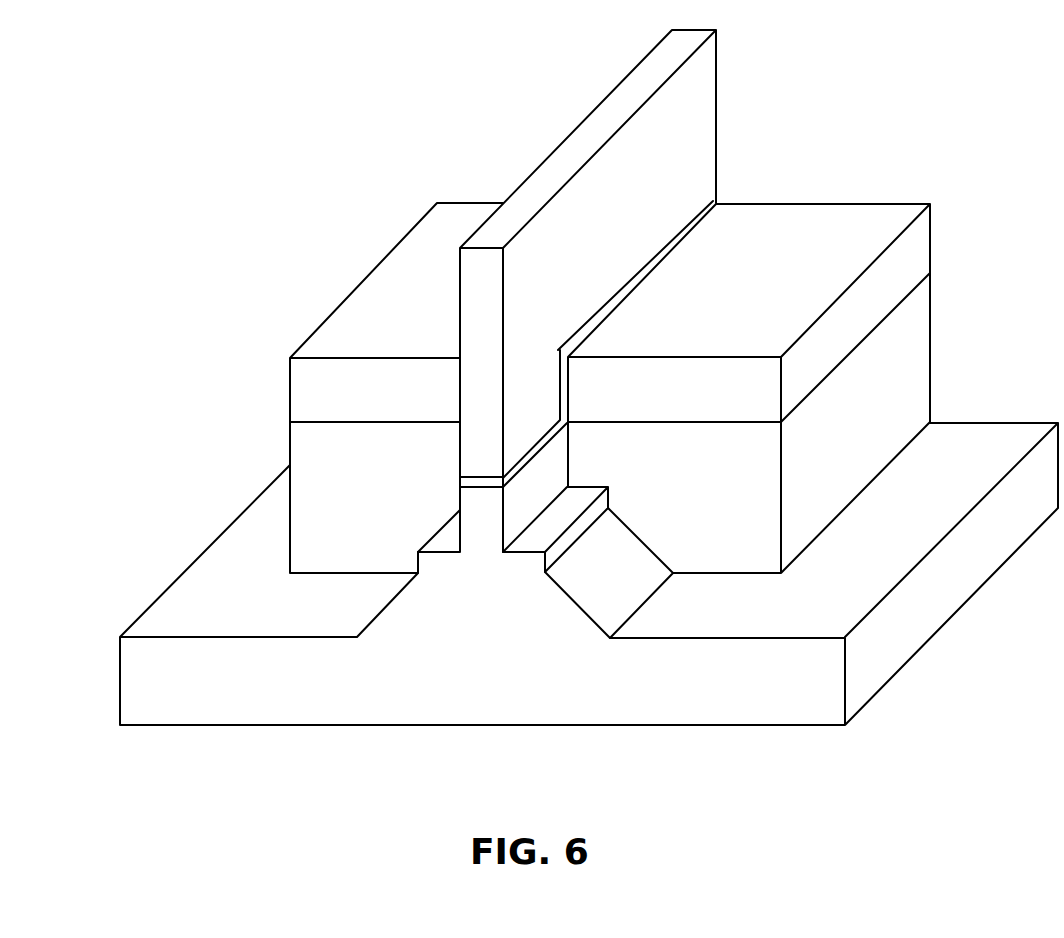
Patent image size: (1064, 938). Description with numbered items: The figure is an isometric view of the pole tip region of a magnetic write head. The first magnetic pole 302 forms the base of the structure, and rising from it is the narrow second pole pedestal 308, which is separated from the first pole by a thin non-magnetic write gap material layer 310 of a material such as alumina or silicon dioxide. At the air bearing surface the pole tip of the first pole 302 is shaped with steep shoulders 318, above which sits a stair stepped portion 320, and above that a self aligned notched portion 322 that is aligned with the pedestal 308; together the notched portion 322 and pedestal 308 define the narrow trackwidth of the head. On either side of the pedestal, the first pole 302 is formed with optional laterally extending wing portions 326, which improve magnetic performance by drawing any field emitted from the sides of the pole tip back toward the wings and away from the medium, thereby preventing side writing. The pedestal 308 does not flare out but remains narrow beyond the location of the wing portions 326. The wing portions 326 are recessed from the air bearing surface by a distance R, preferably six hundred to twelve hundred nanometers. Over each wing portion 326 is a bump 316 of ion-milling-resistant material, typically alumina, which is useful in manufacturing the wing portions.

The first magnetic pole 302 is at (453, 674).
The second magnetic pole 308 is at (683, 138).
The write gap material layer 310 is at (705, 205).
The alumina bump 316 is at (348, 315).
The steep shoulders 318 is at (622, 538).
The stair stepped portion 320 is at (605, 500).
The self aligned notched portion 322 is at (555, 457).
The laterally extending wing portions 326 is at (290, 449).
The recess distance R is at (765, 575).